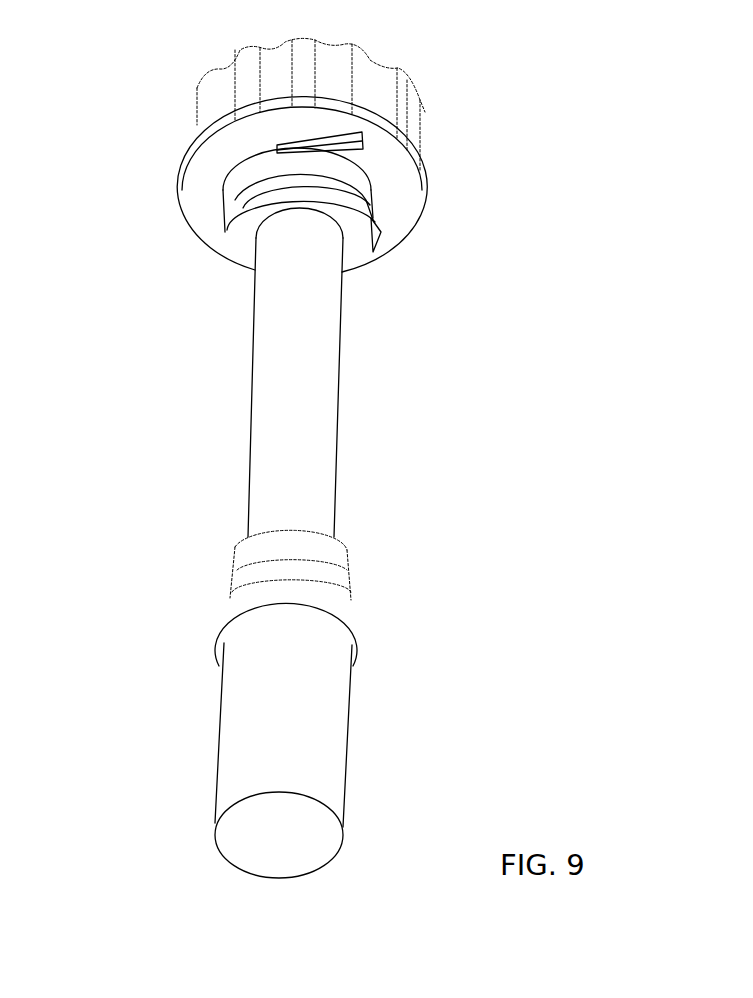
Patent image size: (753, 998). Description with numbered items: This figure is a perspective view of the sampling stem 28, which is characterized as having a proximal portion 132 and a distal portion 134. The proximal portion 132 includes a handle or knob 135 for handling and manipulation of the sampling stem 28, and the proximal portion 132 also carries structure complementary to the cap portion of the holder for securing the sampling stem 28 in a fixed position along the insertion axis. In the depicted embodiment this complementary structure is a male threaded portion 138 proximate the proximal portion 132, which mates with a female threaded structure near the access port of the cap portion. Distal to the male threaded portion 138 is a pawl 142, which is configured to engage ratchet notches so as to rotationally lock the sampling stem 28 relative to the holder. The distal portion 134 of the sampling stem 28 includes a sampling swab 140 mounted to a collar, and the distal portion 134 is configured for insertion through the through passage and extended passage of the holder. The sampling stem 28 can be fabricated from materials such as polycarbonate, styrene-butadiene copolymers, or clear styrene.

The sampling stem 28 is at (128, 75).
The proximal portion 132 is at (158, 100).
The distal portion 134 is at (176, 562).
The handle or knob 135 is at (413, 108).
The male threaded portion 138 is at (374, 222).
The sampling swab 140 is at (357, 627).
The pawl 142 is at (362, 142).